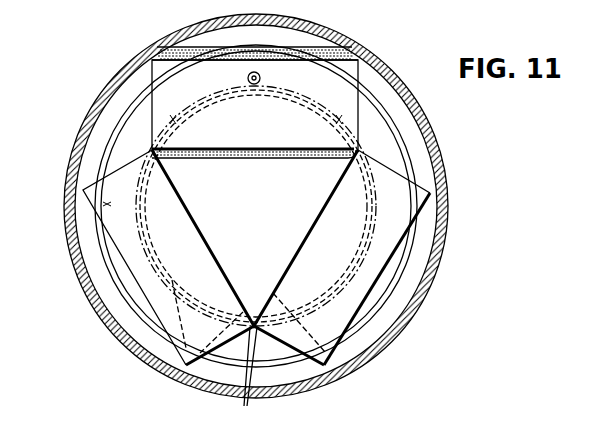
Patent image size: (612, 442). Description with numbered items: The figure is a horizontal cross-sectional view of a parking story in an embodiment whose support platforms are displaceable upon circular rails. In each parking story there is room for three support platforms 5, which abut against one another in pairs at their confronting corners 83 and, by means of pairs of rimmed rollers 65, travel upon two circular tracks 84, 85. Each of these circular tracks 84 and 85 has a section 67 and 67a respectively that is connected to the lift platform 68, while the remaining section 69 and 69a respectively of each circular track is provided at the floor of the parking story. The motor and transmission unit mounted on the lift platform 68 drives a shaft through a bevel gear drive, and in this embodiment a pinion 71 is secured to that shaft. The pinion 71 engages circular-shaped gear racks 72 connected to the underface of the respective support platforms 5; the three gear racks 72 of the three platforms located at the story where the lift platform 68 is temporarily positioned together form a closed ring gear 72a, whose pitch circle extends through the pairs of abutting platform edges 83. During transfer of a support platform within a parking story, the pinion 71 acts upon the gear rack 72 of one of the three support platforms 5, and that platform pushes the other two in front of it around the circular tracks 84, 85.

The support platform 5 is at (163, 98).
The rimmed rollers 65 is at (381, 201).
The section of circular track 67 is at (220, 50).
The section of circular track 67a is at (293, 112).
The lift platform 68 is at (320, 62).
The remaining section of circular track 69 is at (113, 281).
The remaining section of circular track 69a is at (177, 280).
The pinion 71 is at (247, 78).
The gear rack 72 is at (140, 185).
The ring gear 72a is at (336, 302).
The confronting corners 83 is at (244, 380).
The circular track 84 is at (396, 136).
The circular track 85 is at (395, 280).